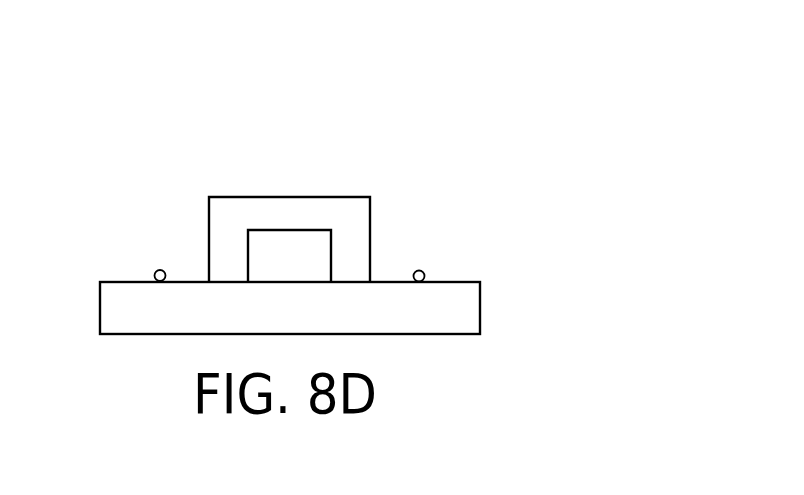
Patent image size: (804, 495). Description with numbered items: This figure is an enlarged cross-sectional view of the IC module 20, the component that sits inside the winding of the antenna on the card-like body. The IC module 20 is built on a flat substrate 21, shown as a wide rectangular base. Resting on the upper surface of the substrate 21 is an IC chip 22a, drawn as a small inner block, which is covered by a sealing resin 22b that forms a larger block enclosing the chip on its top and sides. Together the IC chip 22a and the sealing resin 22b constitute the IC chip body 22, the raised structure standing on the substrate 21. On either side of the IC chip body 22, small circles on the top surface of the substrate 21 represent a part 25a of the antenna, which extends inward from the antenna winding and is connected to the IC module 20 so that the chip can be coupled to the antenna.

The IC module 20 is at (472, 148).
The substrate 21 is at (457, 308).
The IC chip body 22 is at (355, 221).
The IC chip 22a is at (270, 237).
The sealing resin 22b is at (318, 208).
The part of the antenna 25a is at (160, 269).